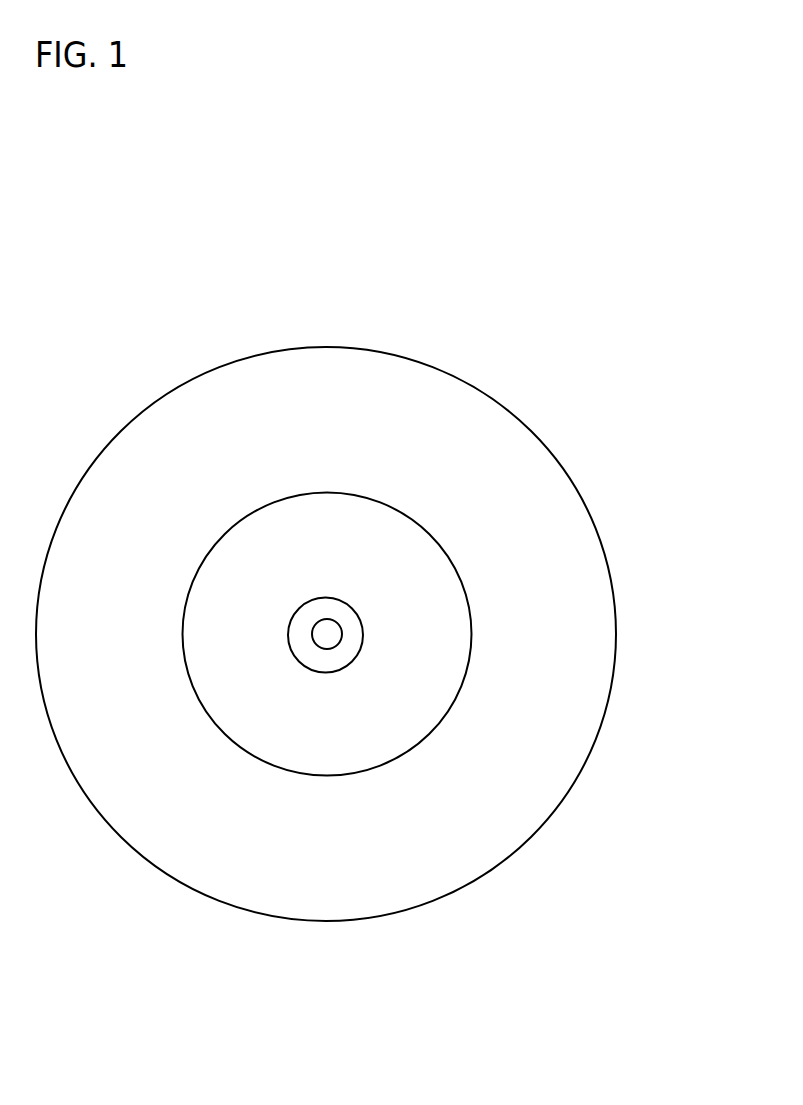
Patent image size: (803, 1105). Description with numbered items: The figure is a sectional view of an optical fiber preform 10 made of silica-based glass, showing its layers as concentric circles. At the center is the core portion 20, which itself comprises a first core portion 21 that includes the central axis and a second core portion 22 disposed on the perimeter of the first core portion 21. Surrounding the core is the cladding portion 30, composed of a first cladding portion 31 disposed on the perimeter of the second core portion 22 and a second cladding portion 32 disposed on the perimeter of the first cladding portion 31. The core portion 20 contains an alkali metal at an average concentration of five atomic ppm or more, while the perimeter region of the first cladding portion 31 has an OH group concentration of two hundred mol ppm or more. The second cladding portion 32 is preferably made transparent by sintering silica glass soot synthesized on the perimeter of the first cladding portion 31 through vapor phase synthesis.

The optical fiber preform 10 is at (582, 447).
The core portion 20 is at (673, 523).
The first core portion 21 is at (330, 637).
The second core portion 22 is at (352, 642).
The cladding portion 30 is at (673, 663).
The first cladding portion 31 is at (452, 655).
The second cladding portion 32 is at (587, 711).